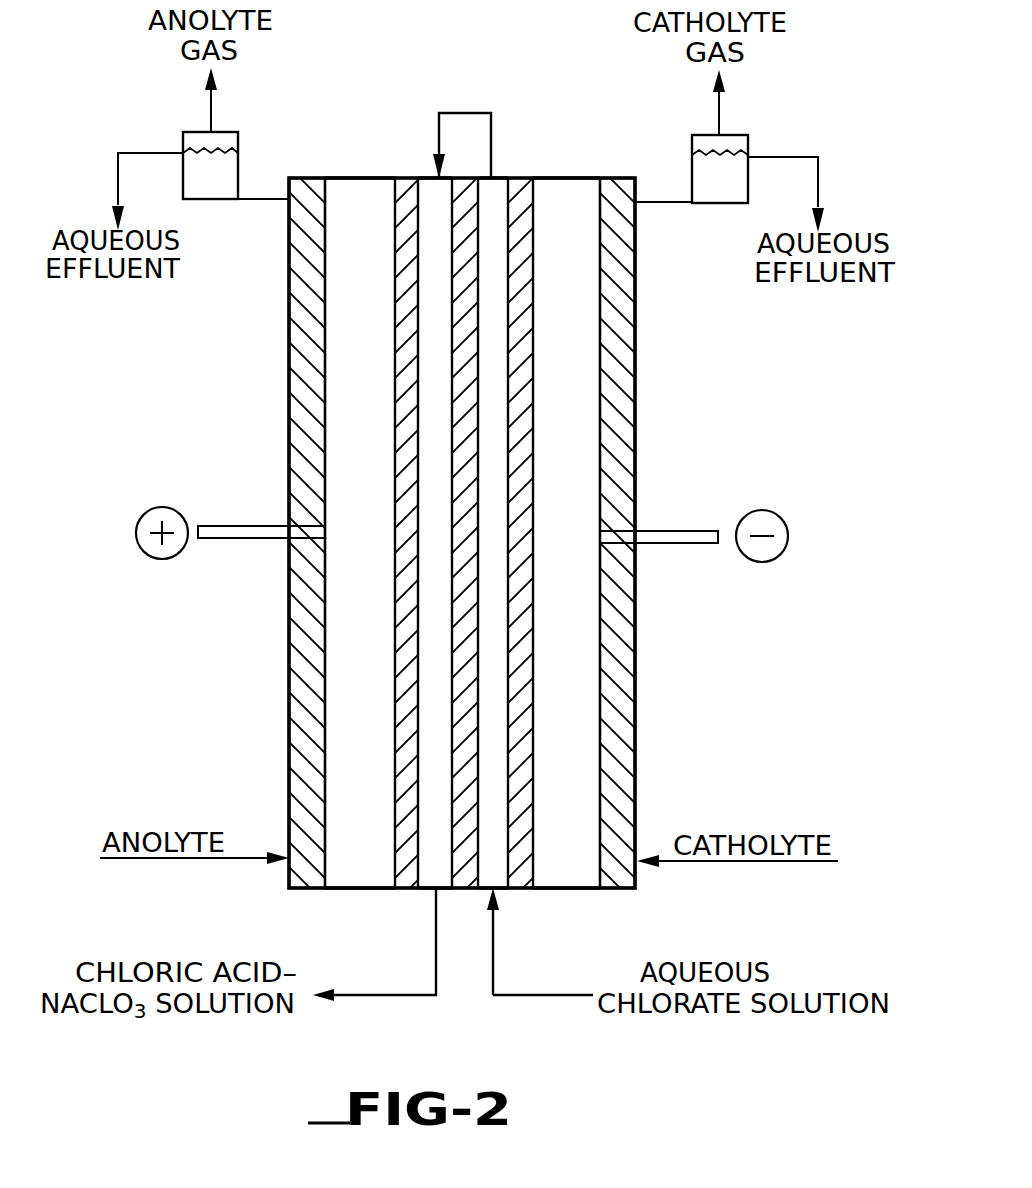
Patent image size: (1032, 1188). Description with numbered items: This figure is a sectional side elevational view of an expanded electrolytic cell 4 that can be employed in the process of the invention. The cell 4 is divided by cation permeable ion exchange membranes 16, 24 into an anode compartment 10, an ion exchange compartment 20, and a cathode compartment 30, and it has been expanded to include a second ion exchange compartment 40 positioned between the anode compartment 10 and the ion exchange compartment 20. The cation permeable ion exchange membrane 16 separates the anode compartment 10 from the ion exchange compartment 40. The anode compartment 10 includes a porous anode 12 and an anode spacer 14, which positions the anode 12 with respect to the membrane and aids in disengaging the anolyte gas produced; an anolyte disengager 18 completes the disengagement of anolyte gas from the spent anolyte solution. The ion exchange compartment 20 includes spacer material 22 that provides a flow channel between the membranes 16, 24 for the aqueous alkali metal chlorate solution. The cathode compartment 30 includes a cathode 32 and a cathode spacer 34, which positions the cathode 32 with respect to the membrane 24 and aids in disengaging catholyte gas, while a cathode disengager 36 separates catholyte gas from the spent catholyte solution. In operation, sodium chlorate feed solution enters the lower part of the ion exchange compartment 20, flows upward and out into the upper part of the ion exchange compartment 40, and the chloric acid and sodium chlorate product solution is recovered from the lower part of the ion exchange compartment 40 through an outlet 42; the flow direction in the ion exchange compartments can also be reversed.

The electrolytic cell 4 is at (268, 706).
The anode compartment 10 is at (340, 162).
The anode 12 is at (364, 890).
The anode spacer 14 is at (288, 343).
The cation permeable ion exchange membrane 16 is at (405, 182).
The anolyte disengager 18 is at (212, 200).
The ion exchange compartment 20 is at (492, 498).
The spacer material 22 is at (497, 188).
The cation permeable ion exchange membrane 24 is at (523, 893).
The cathode compartment 30 is at (577, 905).
The cathode 32 is at (574, 190).
The cathode spacer 34 is at (636, 688).
The cathode disengager 36 is at (717, 205).
The second ion exchange compartment 40 is at (430, 465).
The solution outlet conduit 42 is at (463, 890).